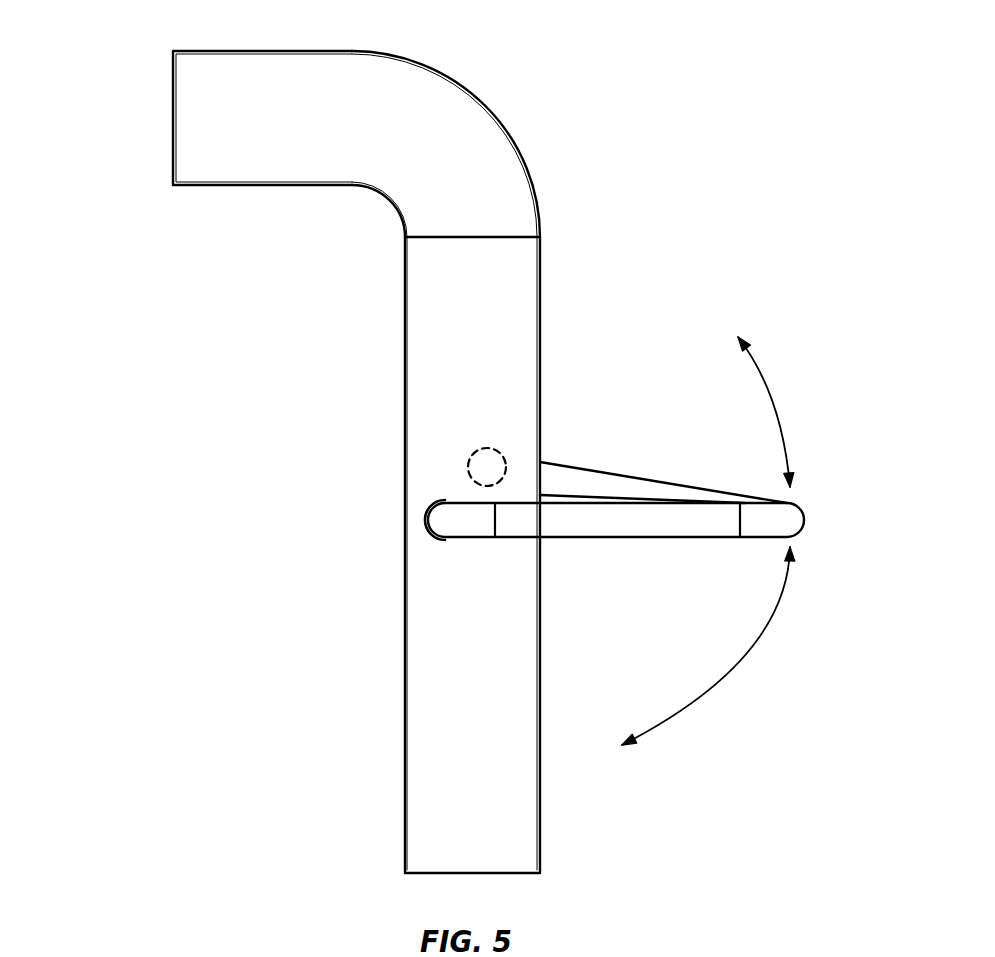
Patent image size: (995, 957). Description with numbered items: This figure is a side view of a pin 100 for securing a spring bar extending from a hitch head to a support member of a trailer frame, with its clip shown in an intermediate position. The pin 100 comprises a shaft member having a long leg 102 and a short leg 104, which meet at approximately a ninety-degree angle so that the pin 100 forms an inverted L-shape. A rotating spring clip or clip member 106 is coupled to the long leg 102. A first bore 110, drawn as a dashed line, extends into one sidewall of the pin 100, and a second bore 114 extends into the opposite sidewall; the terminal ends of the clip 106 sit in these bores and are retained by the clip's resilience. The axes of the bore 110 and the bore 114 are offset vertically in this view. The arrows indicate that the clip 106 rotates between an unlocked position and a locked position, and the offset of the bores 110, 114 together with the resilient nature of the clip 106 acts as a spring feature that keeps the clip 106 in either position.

The pin 100 is at (128, 105).
The long leg 102 is at (405, 425).
The short leg 104 is at (195, 163).
The clip member 106 is at (807, 512).
The first bore 110 is at (505, 463).
The second bore 114 is at (423, 518).